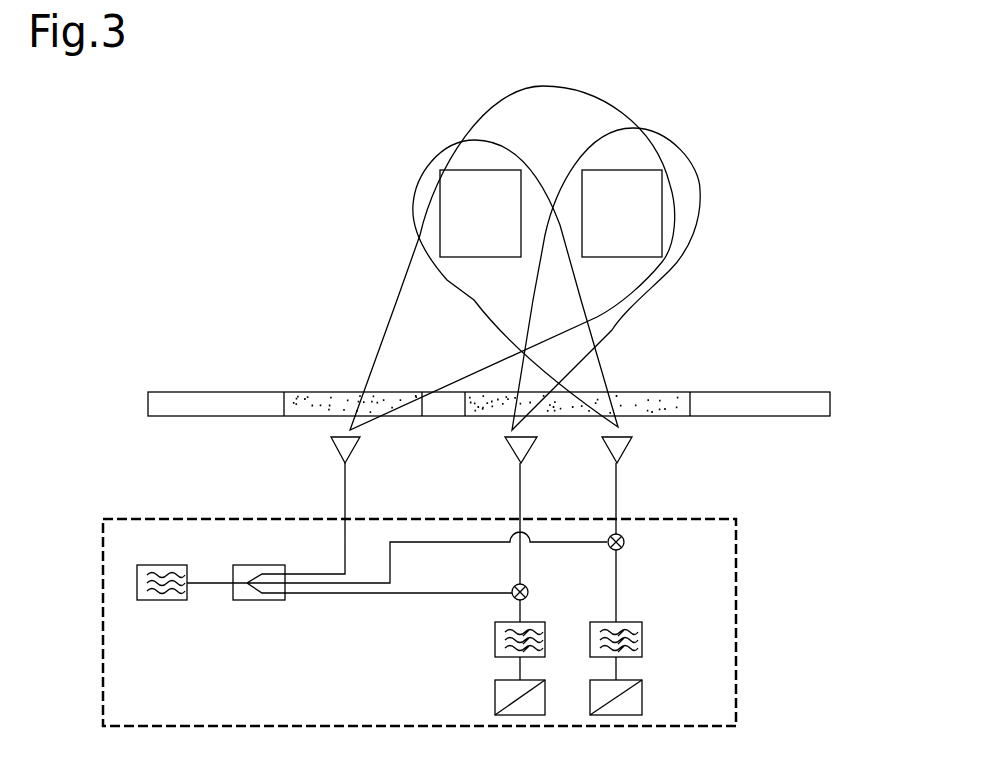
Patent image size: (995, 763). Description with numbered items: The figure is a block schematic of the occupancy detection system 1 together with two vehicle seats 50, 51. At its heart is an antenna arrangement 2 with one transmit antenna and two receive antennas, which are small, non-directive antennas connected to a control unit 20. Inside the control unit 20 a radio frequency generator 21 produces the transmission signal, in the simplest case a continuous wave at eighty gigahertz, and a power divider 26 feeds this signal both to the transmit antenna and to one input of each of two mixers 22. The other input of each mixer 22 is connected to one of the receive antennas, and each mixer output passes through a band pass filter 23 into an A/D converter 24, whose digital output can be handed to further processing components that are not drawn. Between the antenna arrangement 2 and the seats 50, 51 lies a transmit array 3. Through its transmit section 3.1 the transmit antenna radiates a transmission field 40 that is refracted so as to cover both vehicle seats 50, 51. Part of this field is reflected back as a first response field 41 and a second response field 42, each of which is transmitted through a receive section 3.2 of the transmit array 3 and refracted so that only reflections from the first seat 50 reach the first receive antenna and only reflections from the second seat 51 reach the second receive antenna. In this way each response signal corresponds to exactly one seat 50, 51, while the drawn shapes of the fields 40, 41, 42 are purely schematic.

The system 1 is at (474, 355).
The antenna arrangement 2 is at (650, 448).
The transmit array 3 is at (452, 356).
The transmit section 3.1 is at (293, 392).
The receive section 3.2 is at (685, 395).
The control unit 20 is at (453, 594).
The radio frequency generator 21 is at (162, 565).
The mixer 22 is at (513, 587).
The band pass filter 23 is at (494, 640).
The A/D converter 24 is at (494, 695).
The power divider 26 is at (261, 565).
The transmission field 40 is at (606, 108).
The first response field 41 is at (694, 158).
The second response field 42 is at (423, 160).
The first vehicle seat 50 is at (636, 227).
The second vehicle seat 51 is at (494, 227).